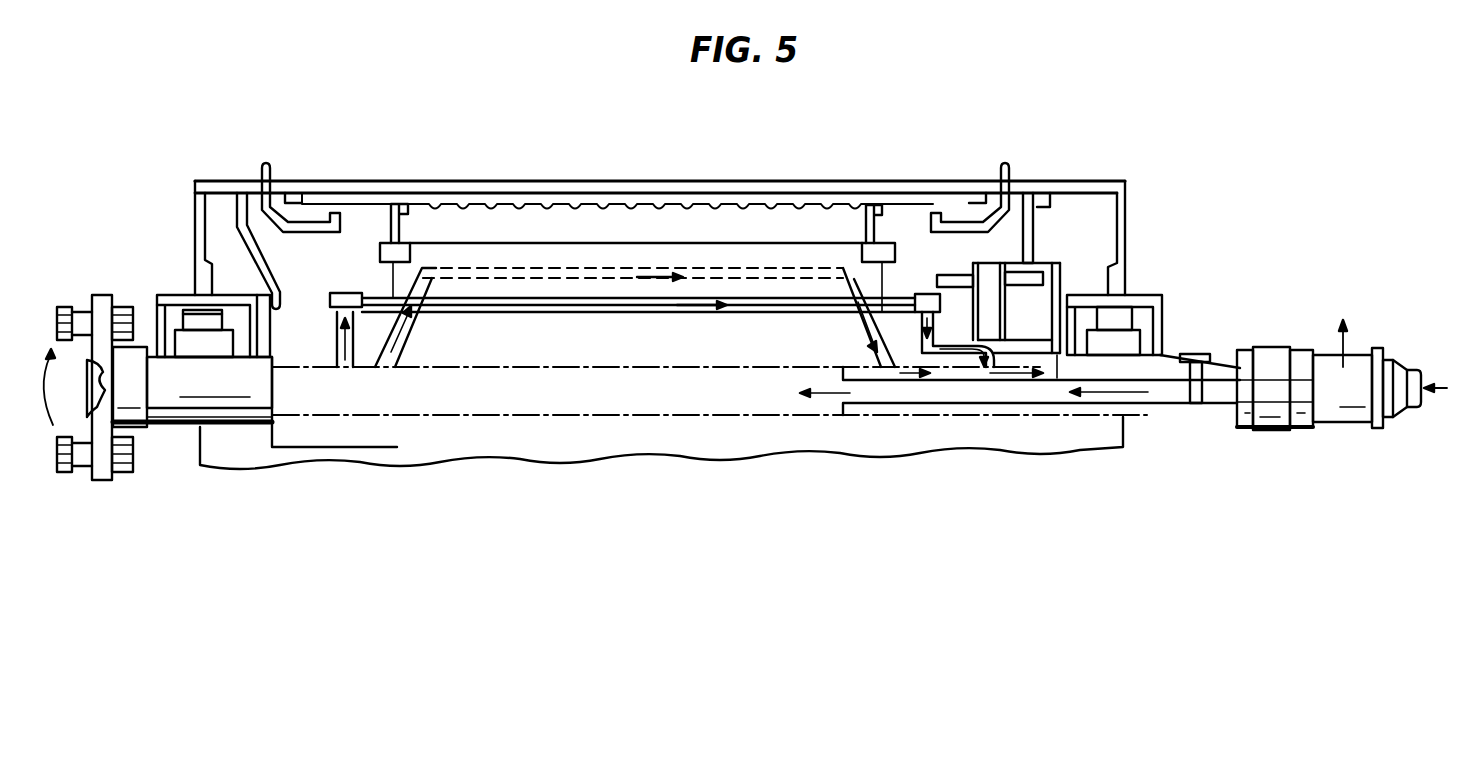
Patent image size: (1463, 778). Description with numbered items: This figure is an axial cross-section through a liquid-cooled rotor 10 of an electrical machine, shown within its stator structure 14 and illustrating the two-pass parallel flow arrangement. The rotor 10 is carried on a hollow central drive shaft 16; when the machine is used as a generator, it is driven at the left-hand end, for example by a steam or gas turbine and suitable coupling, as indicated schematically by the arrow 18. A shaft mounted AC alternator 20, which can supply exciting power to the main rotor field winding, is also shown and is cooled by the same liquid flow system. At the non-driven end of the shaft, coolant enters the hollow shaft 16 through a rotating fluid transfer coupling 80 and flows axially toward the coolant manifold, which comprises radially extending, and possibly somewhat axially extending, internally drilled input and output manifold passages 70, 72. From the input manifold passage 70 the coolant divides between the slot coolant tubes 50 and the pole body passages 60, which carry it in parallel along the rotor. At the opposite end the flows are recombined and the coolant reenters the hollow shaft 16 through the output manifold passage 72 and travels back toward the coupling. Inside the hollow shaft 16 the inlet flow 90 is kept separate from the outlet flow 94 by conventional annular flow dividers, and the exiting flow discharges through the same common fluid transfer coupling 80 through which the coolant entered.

The rotor 10 is at (776, 254).
The stator structure 14 is at (701, 181).
The central drive shaft 16 is at (143, 428).
The drive arrow 18 is at (58, 388).
The shaft mounted AC alternator 20 is at (1001, 305).
The slot coolant tubes 50 is at (581, 312).
The pole body passages 60 is at (585, 268).
The input manifold passage 70 is at (407, 293).
The output manifold passage 72 is at (856, 293).
The rotating fluid transfer coupling 80 is at (1408, 442).
The inlet flow 90 is at (1440, 384).
The outlet flow 94 is at (1340, 345).